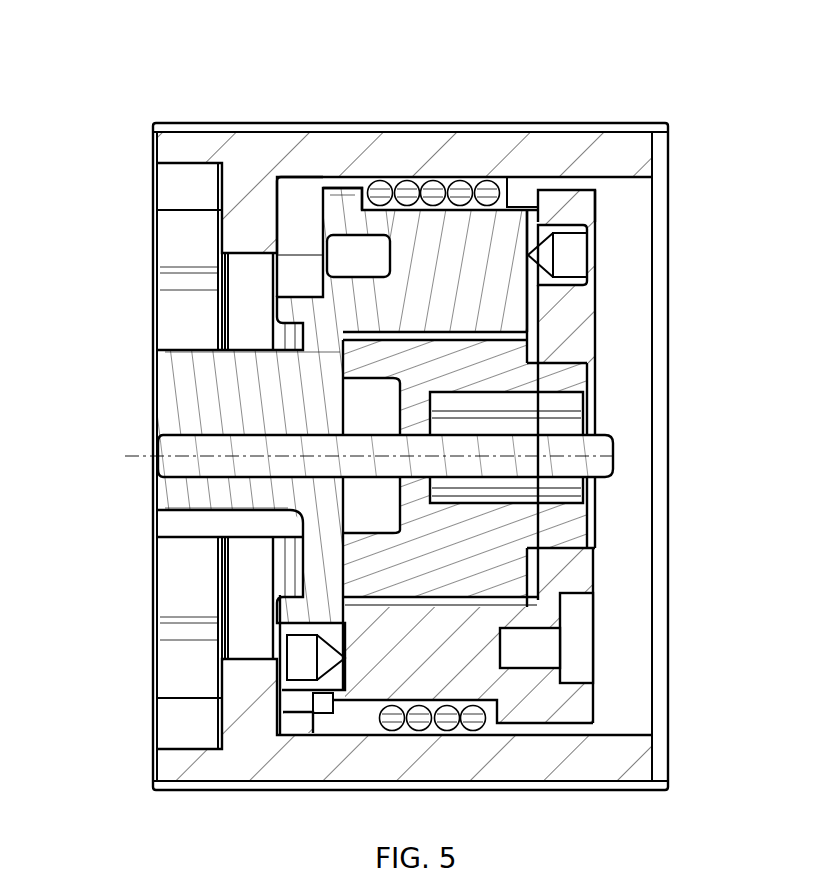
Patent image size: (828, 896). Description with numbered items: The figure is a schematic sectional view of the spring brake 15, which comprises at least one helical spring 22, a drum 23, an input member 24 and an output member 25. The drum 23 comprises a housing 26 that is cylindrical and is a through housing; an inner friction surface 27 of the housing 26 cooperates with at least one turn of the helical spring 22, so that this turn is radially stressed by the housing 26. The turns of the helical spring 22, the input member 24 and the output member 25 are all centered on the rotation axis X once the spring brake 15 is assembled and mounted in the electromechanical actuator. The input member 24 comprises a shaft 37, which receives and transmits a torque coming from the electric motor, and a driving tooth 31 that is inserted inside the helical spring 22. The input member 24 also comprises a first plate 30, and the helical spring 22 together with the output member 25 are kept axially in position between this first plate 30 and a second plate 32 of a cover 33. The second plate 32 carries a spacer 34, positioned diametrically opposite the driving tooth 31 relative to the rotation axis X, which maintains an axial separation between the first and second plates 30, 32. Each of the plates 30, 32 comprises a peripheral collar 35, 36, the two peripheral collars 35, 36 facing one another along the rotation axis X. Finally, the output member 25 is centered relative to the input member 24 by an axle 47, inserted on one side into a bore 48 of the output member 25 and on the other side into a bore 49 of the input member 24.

The spring brake 15 is at (112, 120).
The helical spring 22 is at (406, 190).
The drum 23 is at (627, 150).
The input member 24 is at (286, 461).
The output member 25 is at (570, 527).
The housing 26 is at (610, 187).
The inner friction surface 27 is at (553, 177).
The first plate 30 is at (340, 205).
The driving tooth 31 is at (512, 293).
The second plate 32 is at (582, 332).
The cover 33 is at (582, 710).
The spacer 34 is at (437, 655).
The peripheral collar 35 is at (325, 712).
The peripheral collar 36 is at (573, 207).
The shaft 37 is at (230, 408).
The axle 47 is at (600, 446).
The bore 48 is at (417, 430).
The bore 49 is at (205, 480).
The rotation axis X is at (143, 458).